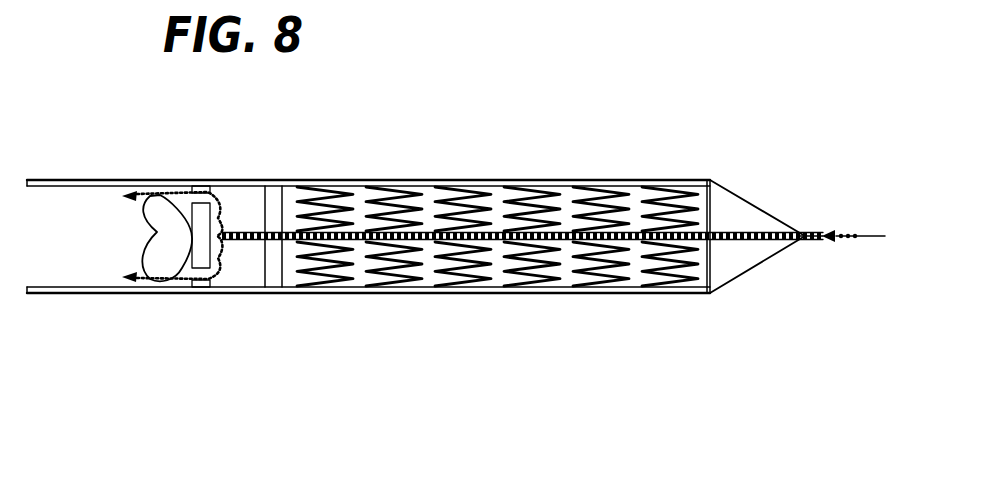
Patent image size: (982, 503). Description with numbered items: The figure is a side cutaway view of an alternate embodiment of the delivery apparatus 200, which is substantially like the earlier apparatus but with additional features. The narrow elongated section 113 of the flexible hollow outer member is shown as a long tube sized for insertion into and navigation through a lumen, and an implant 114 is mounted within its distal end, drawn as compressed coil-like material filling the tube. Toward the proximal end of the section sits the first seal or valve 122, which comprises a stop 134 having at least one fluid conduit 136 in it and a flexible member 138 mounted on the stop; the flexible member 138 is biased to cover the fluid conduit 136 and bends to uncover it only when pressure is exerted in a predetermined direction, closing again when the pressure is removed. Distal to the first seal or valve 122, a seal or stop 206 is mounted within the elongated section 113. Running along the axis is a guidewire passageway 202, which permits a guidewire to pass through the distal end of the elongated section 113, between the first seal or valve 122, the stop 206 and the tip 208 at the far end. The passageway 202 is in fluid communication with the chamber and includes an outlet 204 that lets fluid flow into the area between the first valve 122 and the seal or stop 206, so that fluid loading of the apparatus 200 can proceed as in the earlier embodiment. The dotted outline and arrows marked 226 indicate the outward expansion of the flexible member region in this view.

The delivery apparatus 200 is at (445, 157).
The first seal 122 is at (125, 297).
The seal or stop 206 is at (276, 289).
The elongated section 113 is at (517, 180).
The implant 114 is at (548, 280).
The outlet 204 is at (232, 232).
The tip 208 is at (740, 274).
The guidewire passageway 202 is at (815, 240).
The stop 134 is at (200, 183).
The fluid conduit 136 is at (212, 279).
The flexible member 138 is at (158, 265).
The expansion direction outline / arrows 226 is at (143, 192).